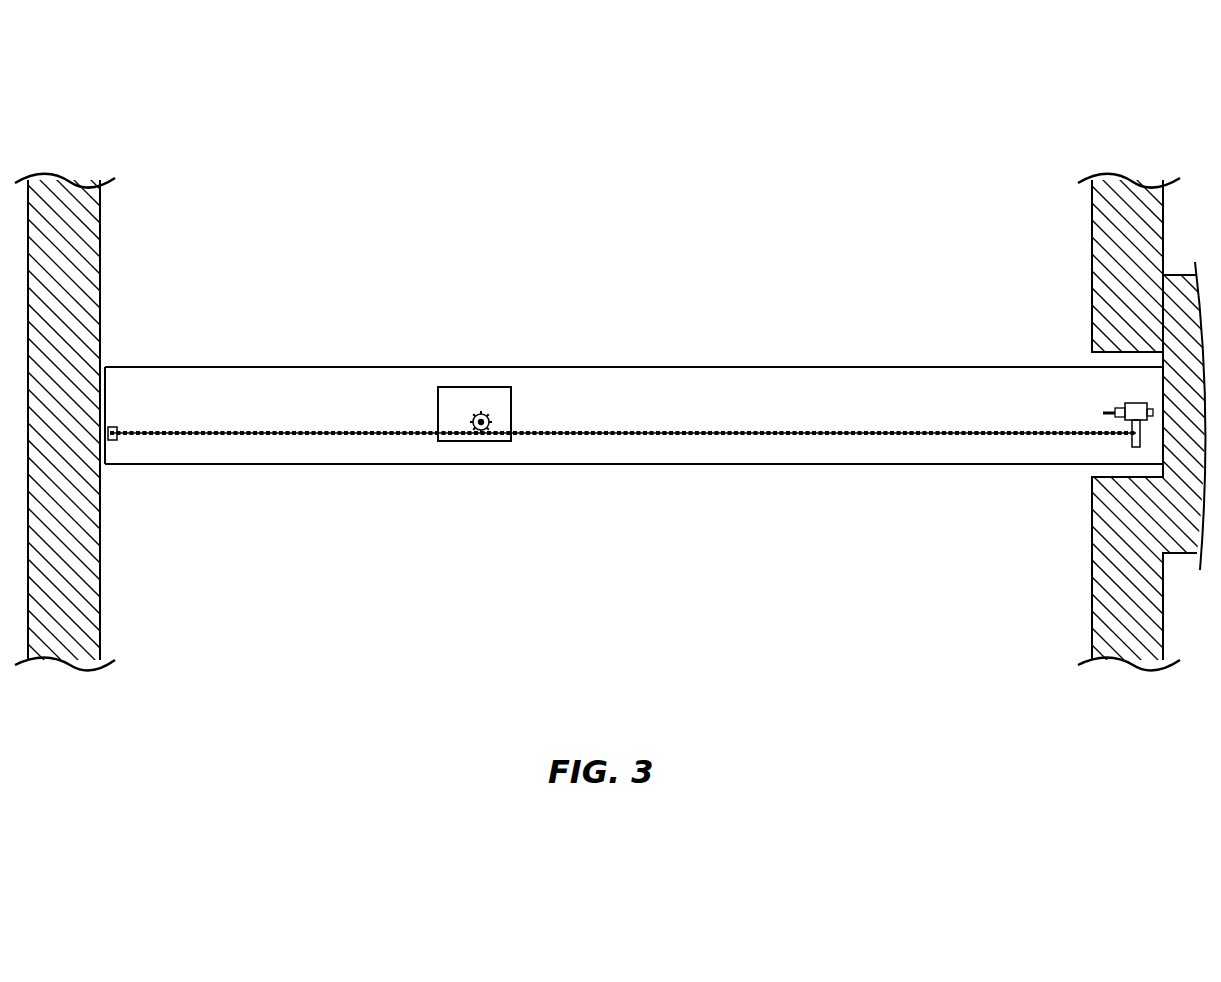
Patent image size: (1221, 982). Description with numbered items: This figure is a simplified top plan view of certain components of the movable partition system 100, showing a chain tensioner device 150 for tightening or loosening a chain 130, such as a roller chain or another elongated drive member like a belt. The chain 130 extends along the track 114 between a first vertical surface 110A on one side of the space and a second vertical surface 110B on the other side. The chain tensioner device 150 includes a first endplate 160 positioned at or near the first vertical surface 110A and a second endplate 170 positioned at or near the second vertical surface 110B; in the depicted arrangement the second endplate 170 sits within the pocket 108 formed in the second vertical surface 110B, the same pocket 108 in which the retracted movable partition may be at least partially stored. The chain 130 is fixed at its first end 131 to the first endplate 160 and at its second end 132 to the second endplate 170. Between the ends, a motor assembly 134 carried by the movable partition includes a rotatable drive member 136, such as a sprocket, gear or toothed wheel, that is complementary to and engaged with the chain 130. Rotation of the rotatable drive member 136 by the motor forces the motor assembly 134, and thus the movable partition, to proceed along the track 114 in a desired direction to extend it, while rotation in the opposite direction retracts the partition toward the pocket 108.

The movable partition system 100 is at (523, 140).
The pocket 108 is at (1088, 352).
The first vertical surface 110A is at (103, 623).
The second vertical surface 110B is at (1092, 580).
The track 114 is at (736, 465).
The chain 130 is at (736, 430).
The first end 131 is at (118, 437).
The second end 132 is at (1127, 442).
The motor assembly 134 is at (440, 408).
The rotatable drive member 136 is at (479, 413).
The chain tensioner device 150 is at (1082, 405).
The first endplate 160 is at (108, 394).
The second endplate 170 is at (1154, 389).